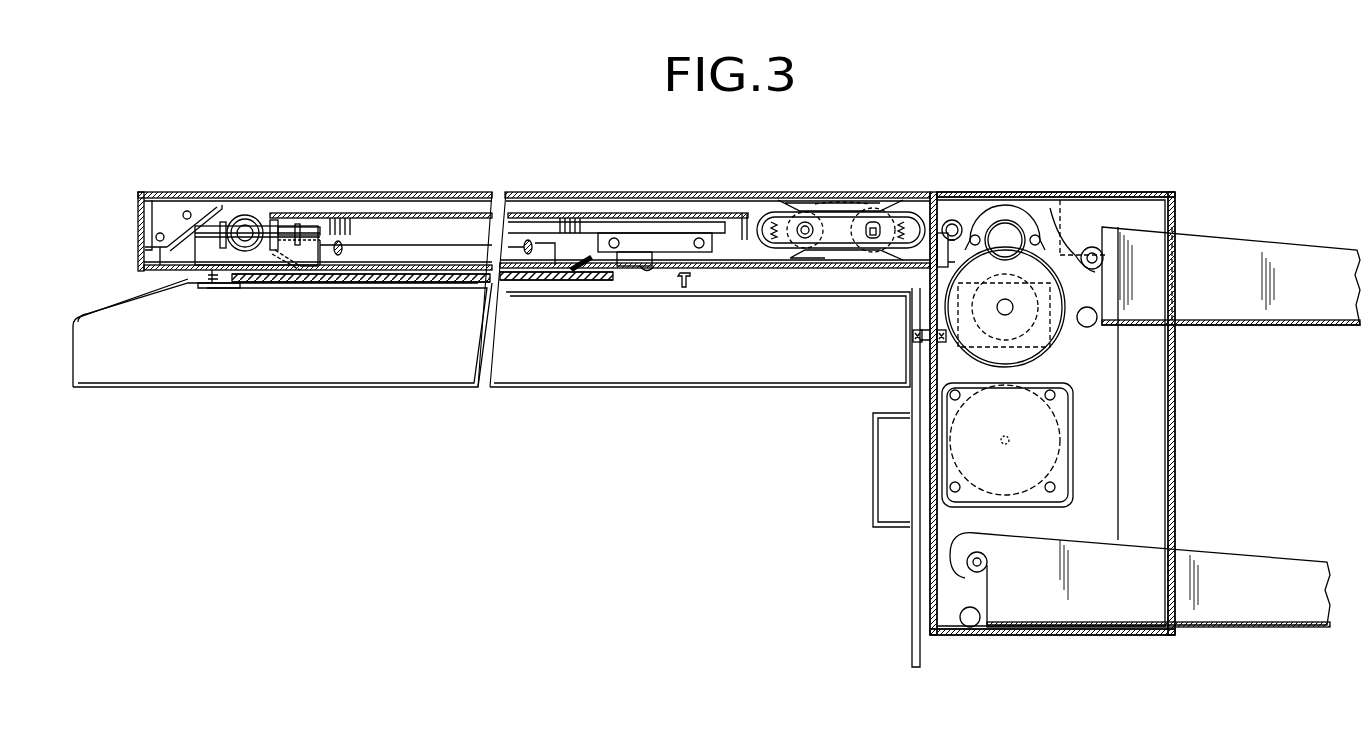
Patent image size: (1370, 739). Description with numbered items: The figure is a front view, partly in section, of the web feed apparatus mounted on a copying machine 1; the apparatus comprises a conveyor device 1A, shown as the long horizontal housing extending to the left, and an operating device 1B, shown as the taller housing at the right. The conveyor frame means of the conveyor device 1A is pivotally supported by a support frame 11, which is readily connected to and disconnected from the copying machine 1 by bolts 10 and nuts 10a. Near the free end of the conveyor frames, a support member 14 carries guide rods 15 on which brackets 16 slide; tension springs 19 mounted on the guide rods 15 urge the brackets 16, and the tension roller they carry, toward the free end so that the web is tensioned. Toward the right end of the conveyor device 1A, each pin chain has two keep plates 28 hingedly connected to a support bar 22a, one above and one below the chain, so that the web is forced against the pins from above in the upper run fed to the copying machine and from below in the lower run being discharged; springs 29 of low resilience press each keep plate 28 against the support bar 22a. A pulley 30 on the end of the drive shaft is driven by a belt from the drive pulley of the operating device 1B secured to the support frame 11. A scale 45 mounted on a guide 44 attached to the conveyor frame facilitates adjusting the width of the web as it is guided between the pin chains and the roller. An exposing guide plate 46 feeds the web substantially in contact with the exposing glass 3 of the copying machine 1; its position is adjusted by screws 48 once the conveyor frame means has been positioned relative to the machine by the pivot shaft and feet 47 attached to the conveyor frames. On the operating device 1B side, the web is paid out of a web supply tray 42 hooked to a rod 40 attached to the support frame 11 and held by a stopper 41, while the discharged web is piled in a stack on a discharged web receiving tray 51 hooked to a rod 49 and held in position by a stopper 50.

The copying machine 1 is at (640, 351).
The conveyor device 1A is at (415, 192).
The operating device 1B is at (1175, 430).
The exposing glass 3 is at (400, 284).
The bolts 10 is at (912, 370).
The nuts 10a is at (912, 348).
The support frame 11 is at (928, 205).
The support member 14 is at (190, 200).
The guide rods 15 is at (283, 220).
The brackets 16 is at (228, 212).
The tension springs 19 is at (285, 268).
The support bar 22a is at (770, 215).
The keep plates 28 is at (843, 205).
The springs 29 is at (782, 242).
The pulley 30 is at (805, 240).
The rod 40 is at (1090, 246).
The stopper 41 is at (1087, 328).
The web supply tray 42 is at (1228, 245).
The guide 44 is at (612, 213).
The scale 45 is at (708, 233).
The exposing guide plate 46 is at (583, 270).
The feet 47 is at (213, 290).
The screws 48 is at (338, 255).
The rod 49 is at (972, 572).
The stopper 50 is at (972, 628).
The discharged web receiving tray 51 is at (1270, 560).